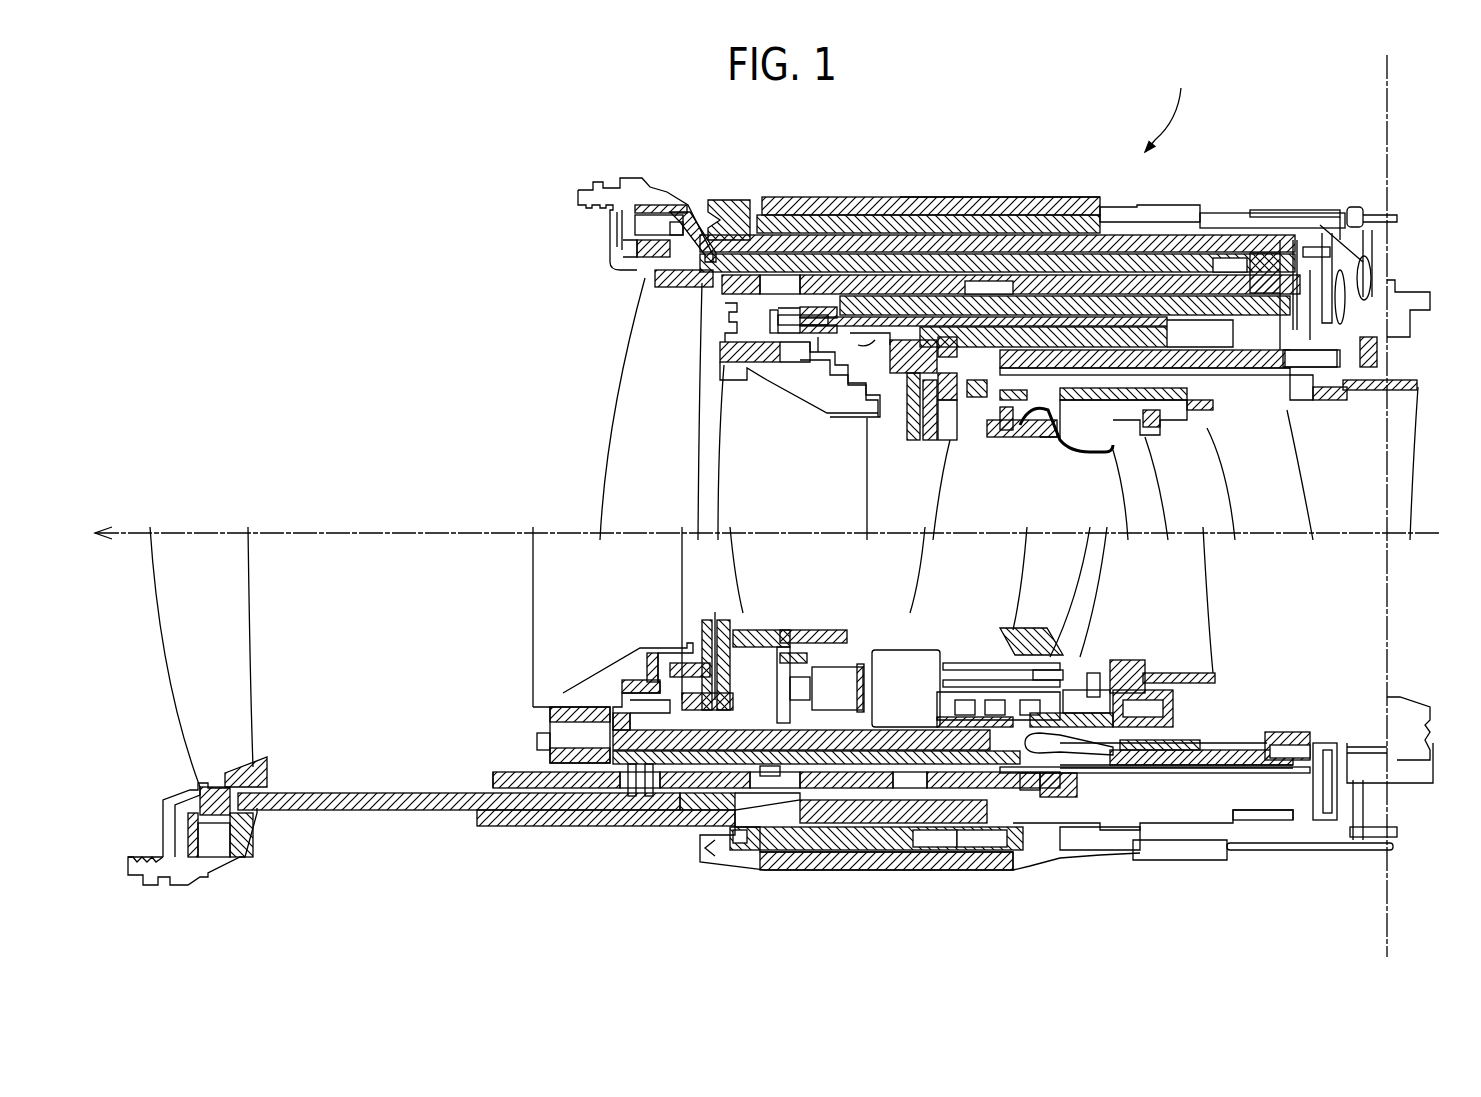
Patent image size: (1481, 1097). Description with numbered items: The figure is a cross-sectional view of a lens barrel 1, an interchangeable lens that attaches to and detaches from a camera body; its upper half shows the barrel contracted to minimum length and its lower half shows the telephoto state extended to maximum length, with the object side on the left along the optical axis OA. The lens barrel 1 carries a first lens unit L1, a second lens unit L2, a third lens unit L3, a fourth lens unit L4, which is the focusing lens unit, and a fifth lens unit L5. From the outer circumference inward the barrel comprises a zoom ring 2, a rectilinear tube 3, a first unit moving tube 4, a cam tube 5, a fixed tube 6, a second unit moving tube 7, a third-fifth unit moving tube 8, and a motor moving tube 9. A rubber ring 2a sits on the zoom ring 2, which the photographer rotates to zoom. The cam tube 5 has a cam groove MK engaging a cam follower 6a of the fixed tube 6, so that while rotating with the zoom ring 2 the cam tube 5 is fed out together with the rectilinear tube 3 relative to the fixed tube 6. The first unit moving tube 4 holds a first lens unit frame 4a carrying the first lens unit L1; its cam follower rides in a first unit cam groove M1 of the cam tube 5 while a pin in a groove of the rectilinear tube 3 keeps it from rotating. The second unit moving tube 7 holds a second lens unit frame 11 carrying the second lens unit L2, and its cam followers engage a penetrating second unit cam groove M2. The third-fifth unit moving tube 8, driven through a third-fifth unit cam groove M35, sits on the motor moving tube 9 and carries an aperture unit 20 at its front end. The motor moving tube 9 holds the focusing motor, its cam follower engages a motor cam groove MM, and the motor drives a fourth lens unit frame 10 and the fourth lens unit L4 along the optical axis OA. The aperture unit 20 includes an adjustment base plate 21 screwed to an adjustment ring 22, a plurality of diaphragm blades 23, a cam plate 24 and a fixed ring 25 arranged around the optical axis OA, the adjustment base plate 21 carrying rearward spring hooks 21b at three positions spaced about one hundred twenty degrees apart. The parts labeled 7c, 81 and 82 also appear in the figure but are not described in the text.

The lens barrel 1 is at (1167, 106).
The zoom ring 2 is at (1028, 215).
The rubber ring 2a is at (967, 200).
The rectilinear tube 3 is at (866, 248).
The first unit moving tube 4 is at (670, 207).
The first lens unit frame 4a is at (648, 255).
The cam tube 5 is at (927, 283).
The fixed tube 6 is at (1065, 305).
The cam follower 6a is at (770, 775).
The second unit moving tube 7 is at (818, 305).
The engagement portion 7c is at (868, 343).
The third-fifth unit moving tube 8 is at (1097, 335).
The motor moving tube 9 is at (1210, 353).
The fourth lens unit frame 10 is at (1148, 388).
The second lens unit frame 11 is at (748, 342).
The aperture unit 20 is at (893, 428).
The adjustment base plate 21 is at (877, 341).
The spring hooks 21b is at (890, 327).
The adjustment ring 22 is at (908, 428).
The diaphragm blades 23 is at (918, 440).
The cam plate 24 is at (932, 450).
The fixed ring 25 is at (958, 390).
The flexible printed board 81 is at (1033, 410).
The rear lens holder 82 is at (1418, 387).
The first lens unit L1 is at (426, 532).
The second lens unit L2 is at (700, 536).
The third lens unit L3 is at (929, 526).
The fourth lens unit L4 is at (1124, 542).
The fifth lens unit L5 is at (1310, 530).
The optical axis OA is at (767, 546).
The first unit cam groove M1 is at (523, 782).
The second unit cam groove M2 is at (640, 775).
The cam groove MK is at (770, 782).
The third-fifth unit cam groove M35 is at (910, 782).
The motor cam groove MM is at (1025, 790).